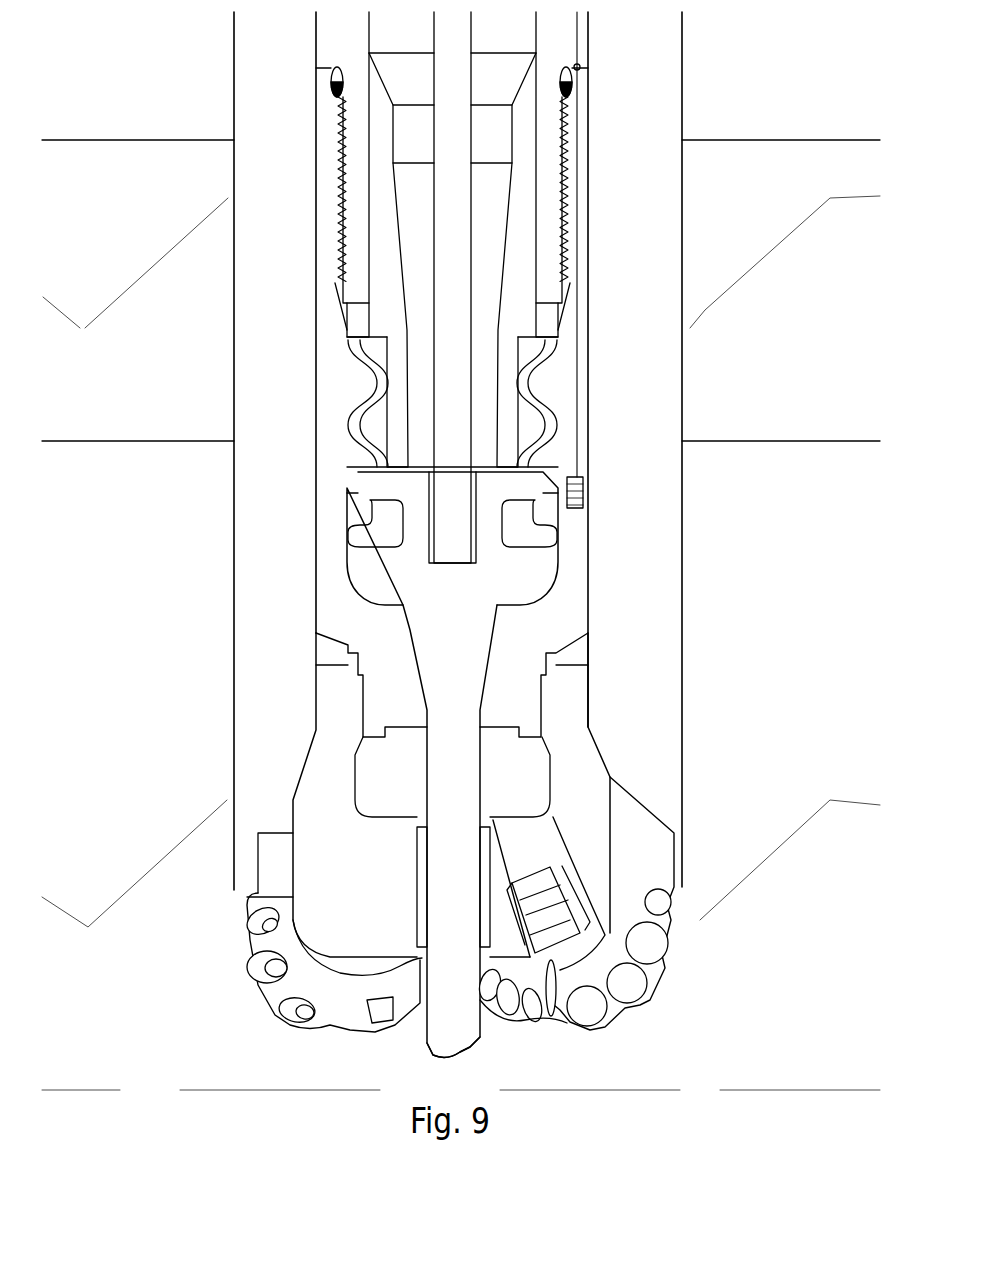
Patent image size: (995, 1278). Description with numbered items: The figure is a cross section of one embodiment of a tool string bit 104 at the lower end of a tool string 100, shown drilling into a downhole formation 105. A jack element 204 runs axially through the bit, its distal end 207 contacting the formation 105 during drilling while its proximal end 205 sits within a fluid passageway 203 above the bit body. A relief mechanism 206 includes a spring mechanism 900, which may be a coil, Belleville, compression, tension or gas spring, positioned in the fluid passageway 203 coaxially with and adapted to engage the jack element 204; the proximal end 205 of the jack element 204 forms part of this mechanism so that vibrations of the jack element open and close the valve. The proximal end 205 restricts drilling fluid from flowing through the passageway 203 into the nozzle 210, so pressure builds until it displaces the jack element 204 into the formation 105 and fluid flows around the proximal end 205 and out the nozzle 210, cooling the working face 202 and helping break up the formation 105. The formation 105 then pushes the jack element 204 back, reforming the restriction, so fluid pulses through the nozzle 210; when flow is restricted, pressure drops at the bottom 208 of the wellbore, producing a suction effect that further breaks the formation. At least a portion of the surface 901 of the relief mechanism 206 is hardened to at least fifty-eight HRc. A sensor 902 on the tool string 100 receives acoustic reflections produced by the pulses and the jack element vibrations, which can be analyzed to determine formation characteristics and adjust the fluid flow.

The tool string 100 is at (156, 62).
The tool string bit 104 is at (119, 456).
The downhole formation 105 is at (167, 1056).
The working face 202 is at (643, 1037).
The fluid passageway 203 is at (502, 212).
The jack element 204 is at (442, 818).
The proximal end 205 is at (581, 531).
The relief mechanism 206 is at (281, 440).
The distal end 207 is at (480, 1058).
The bottom of the wellbore 208 is at (551, 1040).
The nozzle 210 is at (560, 860).
The spring mechanism 900 is at (559, 384).
The surface 901 is at (545, 447).
The sensor 902 is at (585, 492).